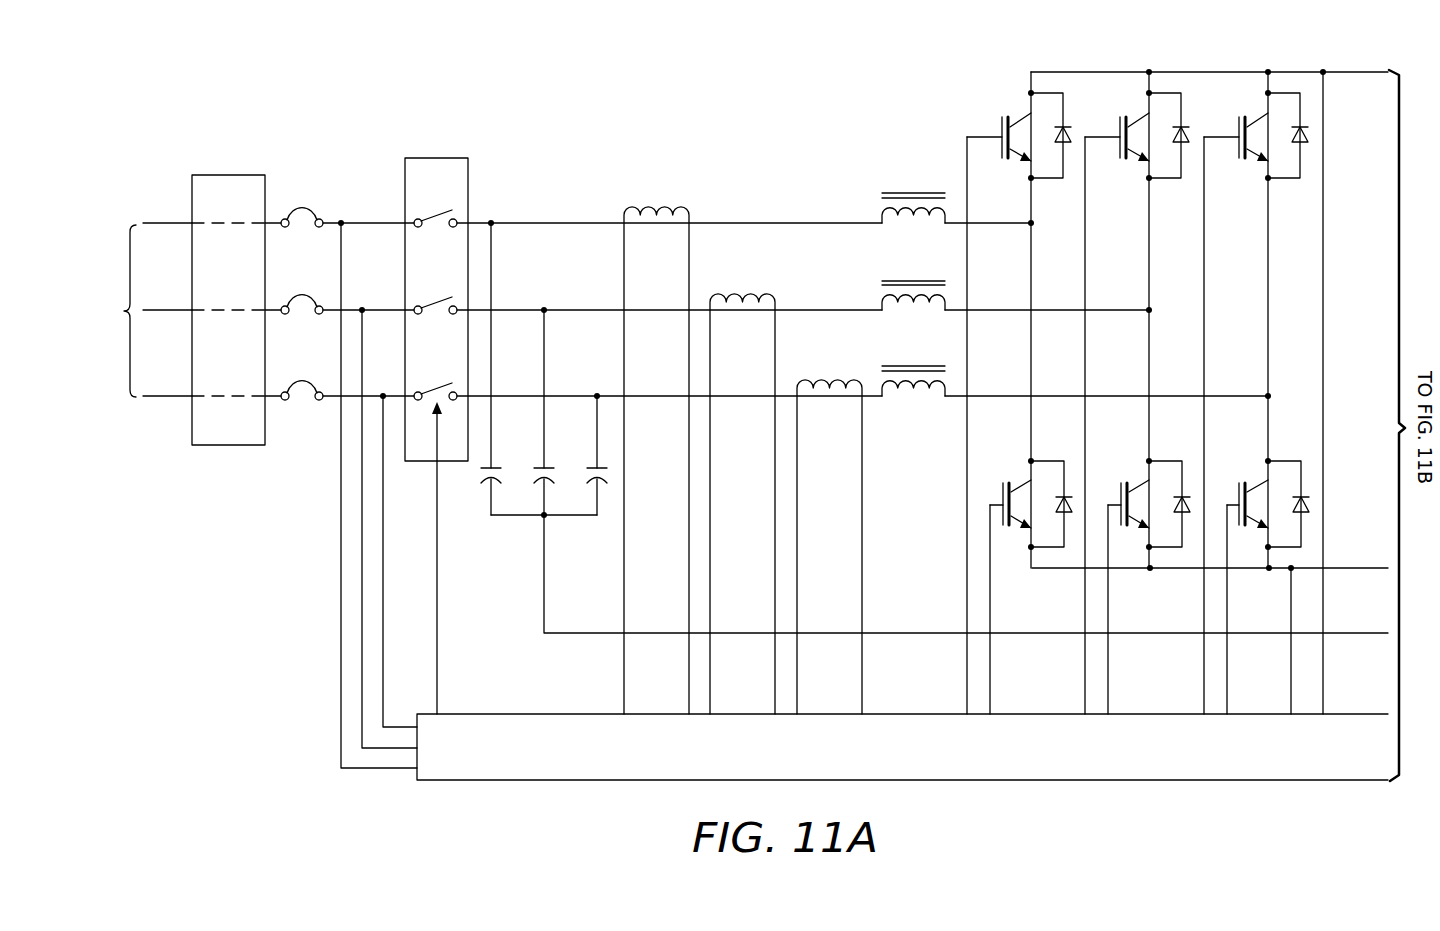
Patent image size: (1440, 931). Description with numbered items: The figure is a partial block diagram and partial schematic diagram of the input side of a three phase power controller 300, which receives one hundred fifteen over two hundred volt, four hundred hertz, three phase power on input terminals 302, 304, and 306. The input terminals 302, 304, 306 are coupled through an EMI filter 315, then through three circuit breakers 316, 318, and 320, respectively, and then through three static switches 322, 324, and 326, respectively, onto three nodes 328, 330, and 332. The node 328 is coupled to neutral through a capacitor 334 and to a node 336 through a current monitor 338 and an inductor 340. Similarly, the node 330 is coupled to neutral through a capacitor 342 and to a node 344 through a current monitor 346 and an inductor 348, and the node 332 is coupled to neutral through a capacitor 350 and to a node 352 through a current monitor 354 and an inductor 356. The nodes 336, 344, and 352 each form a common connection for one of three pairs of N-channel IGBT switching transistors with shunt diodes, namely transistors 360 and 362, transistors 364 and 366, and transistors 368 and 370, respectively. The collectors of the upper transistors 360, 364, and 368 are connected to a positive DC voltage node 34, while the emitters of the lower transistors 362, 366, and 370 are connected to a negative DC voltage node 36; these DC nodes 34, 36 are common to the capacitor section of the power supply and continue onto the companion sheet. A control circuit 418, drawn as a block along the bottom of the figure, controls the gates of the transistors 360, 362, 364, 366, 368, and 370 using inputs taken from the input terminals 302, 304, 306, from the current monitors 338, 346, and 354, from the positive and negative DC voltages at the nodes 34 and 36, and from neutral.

The three phase power controller 300 is at (594, 84).
The input terminal 302 is at (173, 225).
The input terminal 304 is at (173, 311).
The input terminal 306 is at (173, 397).
The EMI filter 315 is at (226, 175).
The circuit breaker 316 is at (301, 201).
The circuit breaker 318 is at (301, 289).
The circuit breaker 320 is at (301, 374).
The static switch 322 is at (446, 214).
The static switch 324 is at (446, 300).
The static switch 326 is at (446, 385).
The node 328 is at (552, 221).
The node 330 is at (584, 308).
The node 332 is at (606, 394).
The capacitor 334 is at (481, 470).
The capacitor 342 is at (536, 468).
The capacitor 350 is at (590, 468).
The current monitor 338 is at (656, 207).
The current monitor 346 is at (741, 294).
The current monitor 354 is at (828, 380).
The inductor 340 is at (913, 191).
The inductor 348 is at (913, 280).
The inductor 356 is at (913, 366).
The node 336 is at (1031, 242).
The node 344 is at (1149, 338).
The node 352 is at (1268, 266).
The positive DC voltage node 34 is at (1099, 71).
The negative DC voltage node 36 is at (1134, 570).
The N-channel IGBT switching transistor 360 is at (997, 123).
The N-channel IGBT switching transistor 362 is at (994, 500).
The N-channel IGBT switching transistor 364 is at (1124, 153).
The N-channel IGBT switching transistor 366 is at (1111, 500).
The N-channel IGBT switching transistor 368 is at (1244, 150).
The N-channel IGBT switching transistor 370 is at (1231, 500).
The control circuit 418 is at (1144, 781).